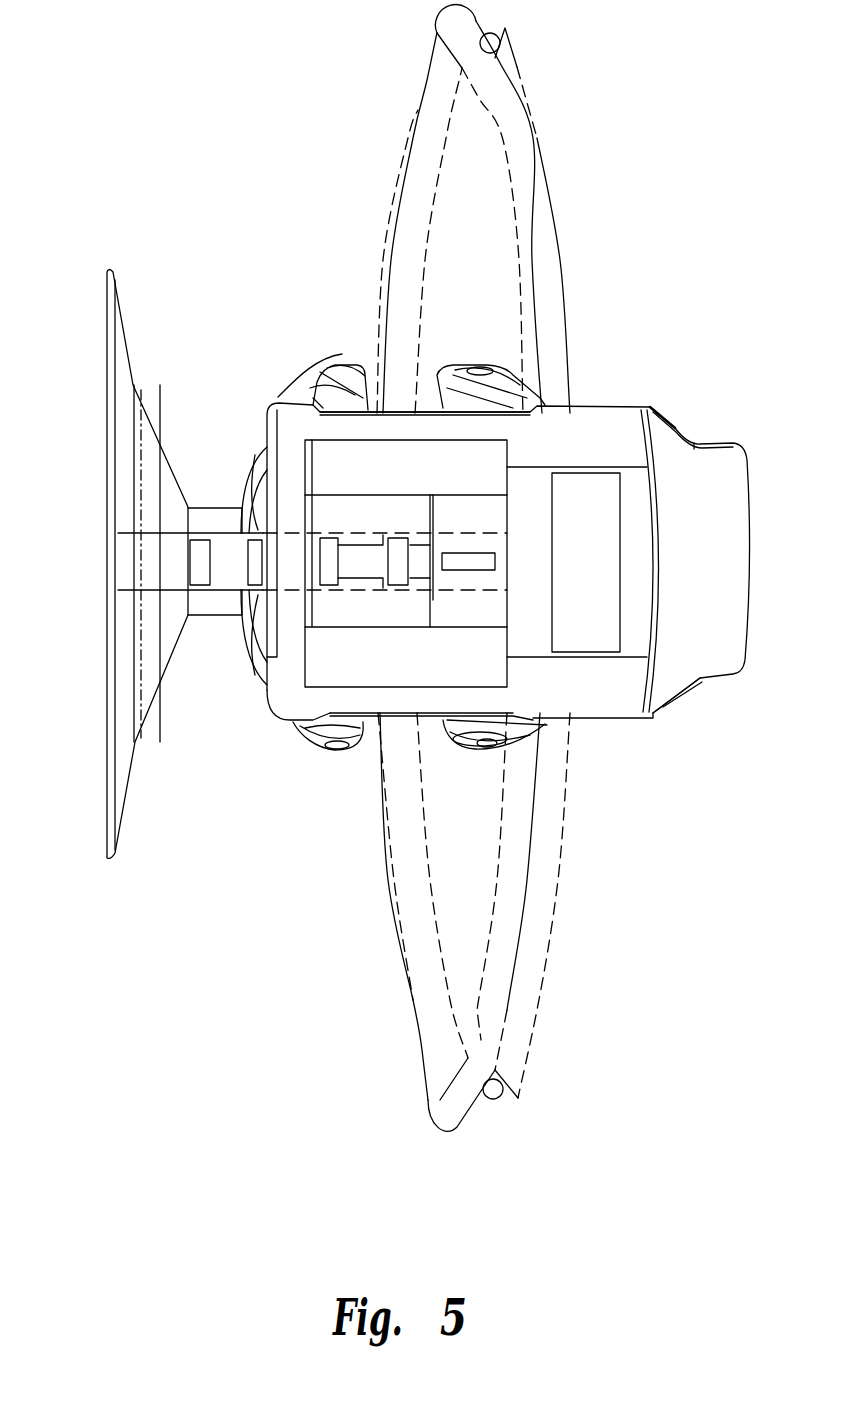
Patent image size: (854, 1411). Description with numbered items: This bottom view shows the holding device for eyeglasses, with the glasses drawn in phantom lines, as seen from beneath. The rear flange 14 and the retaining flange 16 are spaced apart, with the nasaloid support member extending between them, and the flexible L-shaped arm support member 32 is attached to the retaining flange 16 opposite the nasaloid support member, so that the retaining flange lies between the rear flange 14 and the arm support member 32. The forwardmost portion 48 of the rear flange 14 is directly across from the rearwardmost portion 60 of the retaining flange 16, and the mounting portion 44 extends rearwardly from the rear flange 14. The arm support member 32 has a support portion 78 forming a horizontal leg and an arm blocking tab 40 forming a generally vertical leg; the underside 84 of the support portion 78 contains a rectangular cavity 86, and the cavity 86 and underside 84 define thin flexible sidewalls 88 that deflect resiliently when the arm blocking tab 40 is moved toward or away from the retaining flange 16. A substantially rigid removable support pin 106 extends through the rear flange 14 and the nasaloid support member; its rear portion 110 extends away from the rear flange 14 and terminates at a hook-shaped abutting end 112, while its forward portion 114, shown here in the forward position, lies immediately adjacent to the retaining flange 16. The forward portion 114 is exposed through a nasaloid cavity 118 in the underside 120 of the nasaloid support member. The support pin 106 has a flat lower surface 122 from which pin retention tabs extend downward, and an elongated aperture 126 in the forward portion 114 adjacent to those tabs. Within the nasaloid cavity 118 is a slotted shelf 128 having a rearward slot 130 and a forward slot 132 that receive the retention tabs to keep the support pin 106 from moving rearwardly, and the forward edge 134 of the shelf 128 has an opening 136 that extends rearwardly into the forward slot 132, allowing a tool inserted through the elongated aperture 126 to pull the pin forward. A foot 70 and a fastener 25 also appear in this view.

The rear flange 14 is at (343, 743).
The retaining flange 16 is at (478, 745).
The fastener 25 is at (208, 568).
The arm support member 32 is at (653, 698).
The arm blocking tab 40 is at (735, 635).
The mounting portion 44 is at (247, 453).
The forwardmost portion 48 is at (367, 397).
The rearwardmost portion 60 is at (438, 400).
The foot 70 is at (390, 714).
The support portion 78 is at (610, 713).
The underside 84 is at (635, 495).
The rectangular cavity 86 is at (577, 633).
The flexible sidewalls 88 is at (617, 467).
The support pin 106 is at (210, 613).
The rear portion 110 is at (177, 553).
The abutting end 112 is at (117, 567).
The forward portion 114 is at (282, 717).
The nasaloid cavity 118 is at (480, 743).
The underside 120 is at (472, 417).
The flat lower surface 122 is at (223, 553).
The elongated aperture 126 is at (462, 556).
The slotted shelf 128 is at (333, 530).
The rearward slot 130 is at (268, 420).
The forward slot 132 is at (397, 533).
The forward edge 134 is at (433, 513).
The opening 136 is at (423, 562).